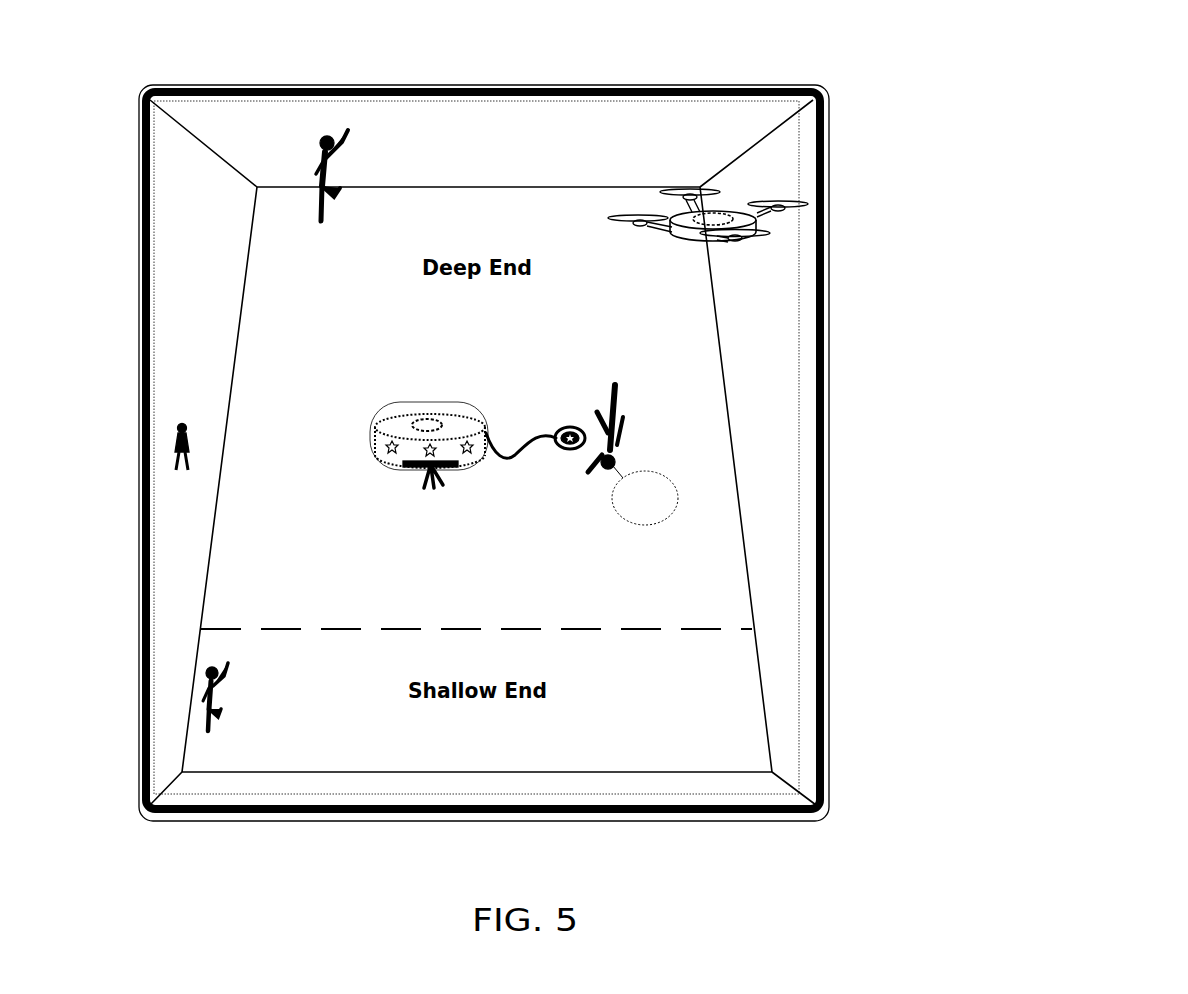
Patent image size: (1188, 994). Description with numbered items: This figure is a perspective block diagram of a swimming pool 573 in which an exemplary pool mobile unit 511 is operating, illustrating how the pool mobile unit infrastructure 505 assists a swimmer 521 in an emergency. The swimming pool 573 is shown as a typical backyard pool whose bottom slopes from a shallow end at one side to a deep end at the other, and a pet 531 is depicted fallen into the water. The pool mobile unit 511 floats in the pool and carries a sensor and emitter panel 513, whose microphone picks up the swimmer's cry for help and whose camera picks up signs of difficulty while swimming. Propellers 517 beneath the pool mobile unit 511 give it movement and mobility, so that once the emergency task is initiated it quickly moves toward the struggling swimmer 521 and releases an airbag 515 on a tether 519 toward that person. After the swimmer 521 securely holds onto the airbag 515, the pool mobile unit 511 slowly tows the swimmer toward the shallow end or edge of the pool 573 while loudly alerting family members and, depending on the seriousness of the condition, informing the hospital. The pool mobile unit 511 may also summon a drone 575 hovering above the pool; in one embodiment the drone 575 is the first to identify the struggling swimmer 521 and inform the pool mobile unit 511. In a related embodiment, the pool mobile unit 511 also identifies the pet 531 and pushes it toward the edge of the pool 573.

The pool mobile unit infrastructure 505 is at (1086, 45).
The pool mobile unit 511 is at (410, 449).
The sensor and emitter panel 513 is at (395, 435).
The airbag 515 is at (553, 444).
The propellers 517 is at (422, 478).
The tether 519 is at (530, 430).
The swimmer 521 is at (620, 437).
The pet 531 is at (192, 443).
The swimming pool 573 is at (780, 397).
The drone 575 is at (675, 243).